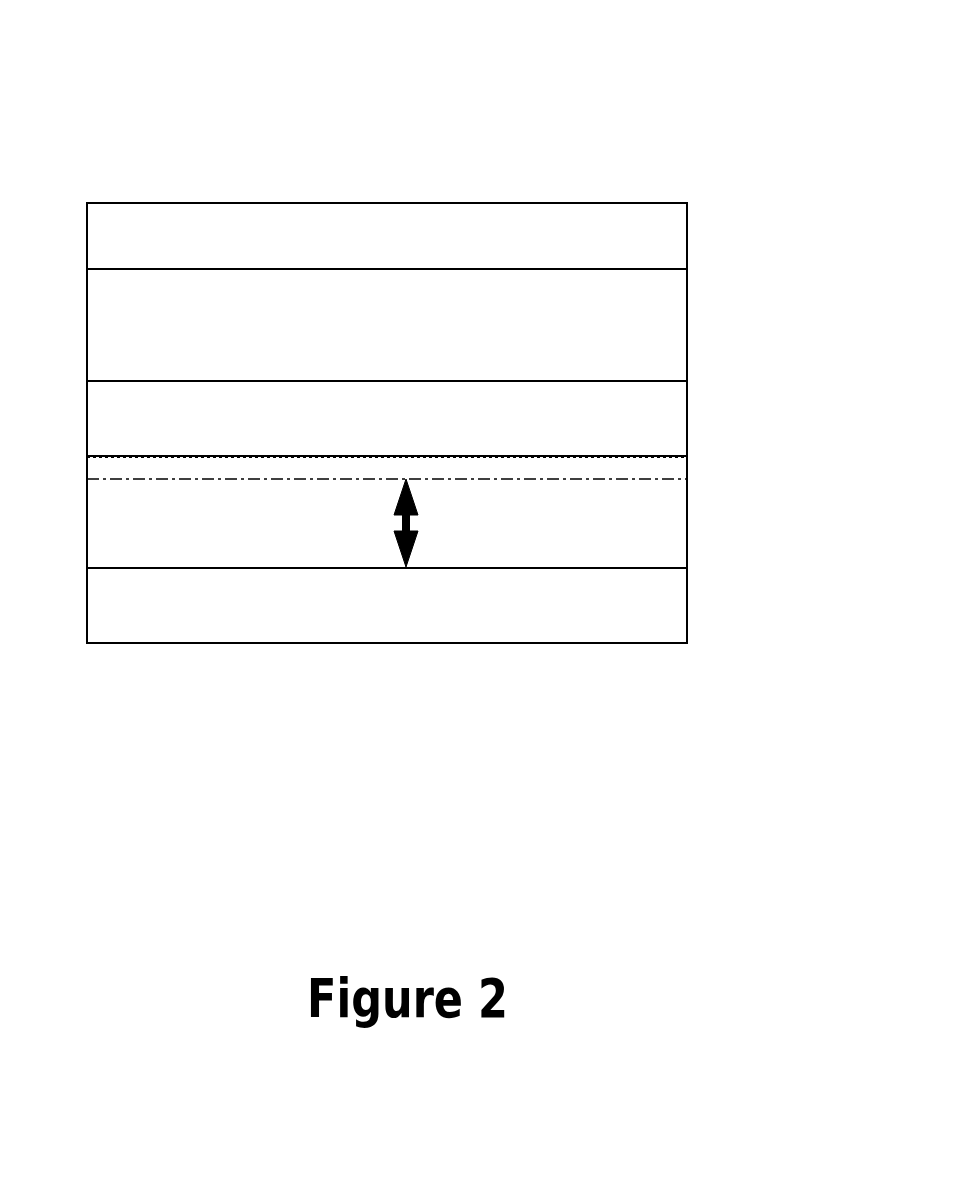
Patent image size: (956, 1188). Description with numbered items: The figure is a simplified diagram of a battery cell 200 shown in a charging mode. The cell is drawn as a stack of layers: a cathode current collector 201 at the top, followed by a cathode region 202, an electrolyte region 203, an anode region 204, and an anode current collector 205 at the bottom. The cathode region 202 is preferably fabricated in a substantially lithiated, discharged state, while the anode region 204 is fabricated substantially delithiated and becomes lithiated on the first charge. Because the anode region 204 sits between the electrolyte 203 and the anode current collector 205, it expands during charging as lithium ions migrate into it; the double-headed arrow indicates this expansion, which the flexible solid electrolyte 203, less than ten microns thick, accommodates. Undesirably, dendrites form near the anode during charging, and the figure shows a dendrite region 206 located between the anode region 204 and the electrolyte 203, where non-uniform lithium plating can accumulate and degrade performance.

The battery cell 200 is at (302, 128).
The cathode current collector 201 is at (687, 230).
The cathode region 202 is at (687, 306).
The electrolyte region 203 is at (687, 418).
The anode region 204 is at (687, 510).
The anode current collector 205 is at (687, 618).
The dendrite region 206 is at (93, 471).